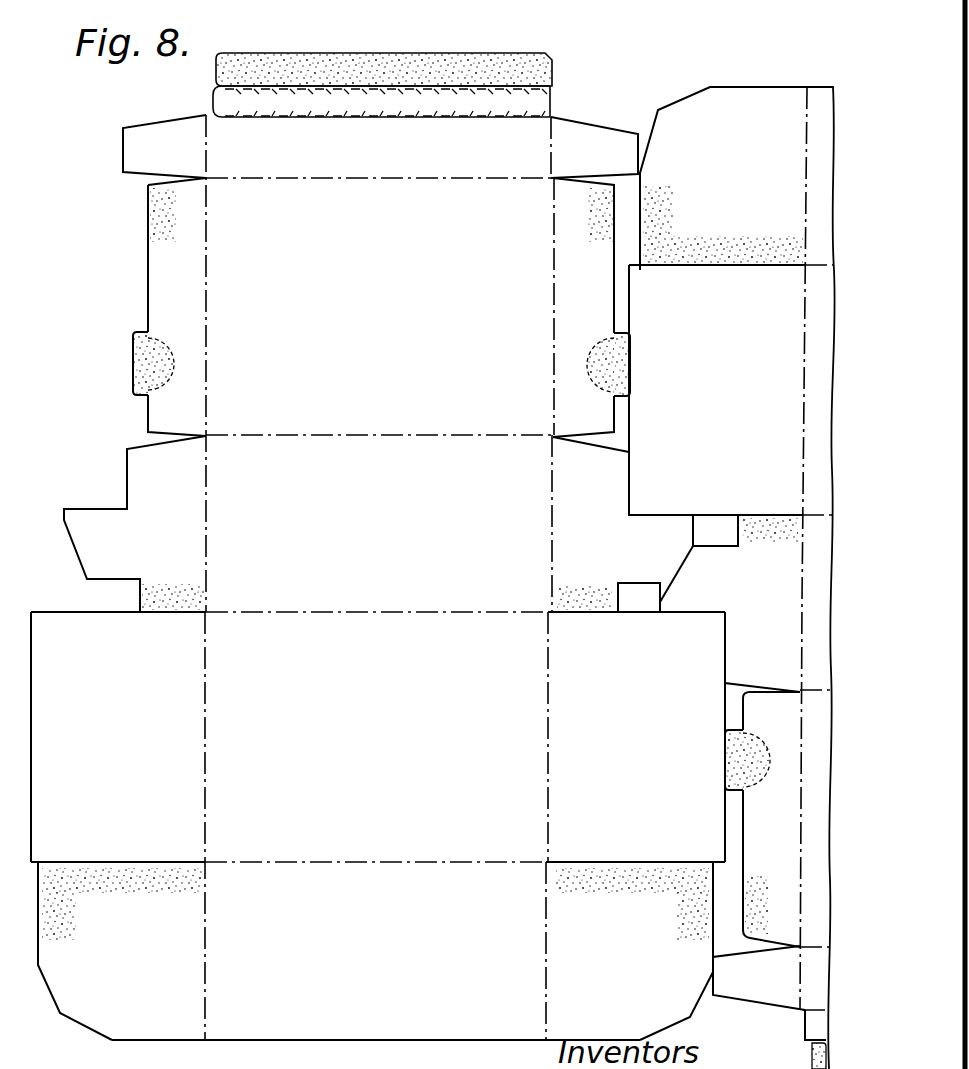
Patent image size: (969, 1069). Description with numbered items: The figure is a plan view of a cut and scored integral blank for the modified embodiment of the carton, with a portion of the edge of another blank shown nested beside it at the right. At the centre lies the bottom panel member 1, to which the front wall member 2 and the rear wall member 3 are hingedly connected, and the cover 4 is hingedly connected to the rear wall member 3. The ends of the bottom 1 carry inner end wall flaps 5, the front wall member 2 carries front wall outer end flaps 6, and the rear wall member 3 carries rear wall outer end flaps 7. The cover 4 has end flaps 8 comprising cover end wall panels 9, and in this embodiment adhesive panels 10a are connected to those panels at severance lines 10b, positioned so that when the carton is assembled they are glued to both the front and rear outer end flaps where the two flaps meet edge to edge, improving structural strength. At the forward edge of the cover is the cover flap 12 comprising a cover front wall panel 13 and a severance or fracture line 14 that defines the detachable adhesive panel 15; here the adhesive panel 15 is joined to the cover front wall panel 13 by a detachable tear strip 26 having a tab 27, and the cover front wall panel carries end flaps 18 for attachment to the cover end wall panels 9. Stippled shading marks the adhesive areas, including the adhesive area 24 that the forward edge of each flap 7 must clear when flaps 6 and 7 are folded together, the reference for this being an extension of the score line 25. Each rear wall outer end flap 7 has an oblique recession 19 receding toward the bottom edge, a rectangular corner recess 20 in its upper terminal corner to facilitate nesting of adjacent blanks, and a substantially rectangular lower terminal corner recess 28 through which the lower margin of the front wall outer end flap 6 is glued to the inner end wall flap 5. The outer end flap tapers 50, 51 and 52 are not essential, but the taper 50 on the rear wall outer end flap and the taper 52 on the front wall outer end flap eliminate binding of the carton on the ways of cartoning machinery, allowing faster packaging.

The bottom panel member 1 is at (426, 611).
The front wall member 2 is at (468, 608).
The rear wall member 3 is at (513, 523).
The cover 4 is at (512, 492).
The inner end wall flaps 5 is at (456, 502).
The front wall outer end flaps 6 is at (436, 563).
The rear wall outer end flaps 7 is at (432, 564).
The end flaps 8 is at (143, 271).
The cover end wall panels 9 is at (474, 562).
The adhesive panels 10a is at (135, 366).
The severance lines 10b is at (170, 352).
The cover flap 12 is at (232, 133).
The cover front wall panel 13 is at (516, 578).
The severance or fracture line 14 is at (343, 86).
The adhesive panel 15 is at (418, 62).
The end flaps 18 is at (464, 562).
The oblique recession 19 is at (80, 558).
The rectangular corner recess 20 is at (112, 492).
The adhesive area 24 is at (663, 201).
The score line 25 is at (275, 612).
The detachable tear strip 26 is at (525, 103).
The tab 27 is at (214, 90).
The lower terminal corner recesses 28 is at (135, 584).
The outer end flap taper 50 is at (153, 447).
The outer end flap taper 51 is at (649, 120).
The outer end flap taper 52 is at (676, 97).